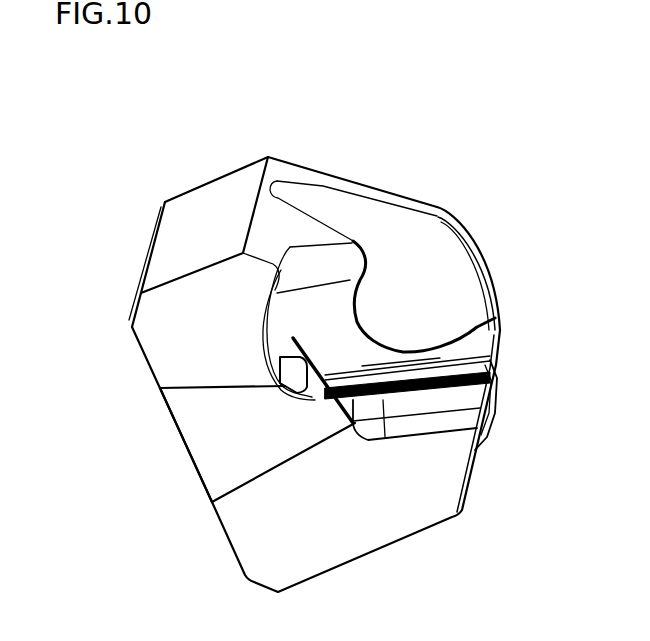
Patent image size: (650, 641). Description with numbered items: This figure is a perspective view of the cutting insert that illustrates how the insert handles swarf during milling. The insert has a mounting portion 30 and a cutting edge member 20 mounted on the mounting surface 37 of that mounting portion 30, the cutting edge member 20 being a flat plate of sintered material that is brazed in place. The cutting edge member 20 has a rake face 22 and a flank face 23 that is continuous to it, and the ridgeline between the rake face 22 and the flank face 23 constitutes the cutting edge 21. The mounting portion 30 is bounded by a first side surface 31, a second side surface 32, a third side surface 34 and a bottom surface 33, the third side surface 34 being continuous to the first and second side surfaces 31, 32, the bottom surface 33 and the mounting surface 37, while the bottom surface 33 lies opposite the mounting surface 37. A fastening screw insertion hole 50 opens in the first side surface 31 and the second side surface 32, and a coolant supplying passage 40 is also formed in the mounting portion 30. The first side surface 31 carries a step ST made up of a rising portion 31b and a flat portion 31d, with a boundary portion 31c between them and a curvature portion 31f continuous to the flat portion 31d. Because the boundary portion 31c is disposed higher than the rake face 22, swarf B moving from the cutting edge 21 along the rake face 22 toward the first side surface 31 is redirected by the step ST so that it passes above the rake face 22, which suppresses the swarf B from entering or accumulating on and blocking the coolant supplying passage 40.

The mounting portion 30 is at (457, 49).
The second side surface 32 is at (172, 428).
The third side surface 34 is at (230, 427).
The first side surface 31 is at (263, 81).
The mounting surface 37 is at (372, 438).
The bottom surface 33 is at (367, 553).
The step ST is at (210, 113).
The curvature portion 31f is at (345, 312).
The flat portion 31d is at (293, 337).
The boundary portion 31c is at (331, 400).
The rising portion 31b is at (333, 320).
The fastening screw insertion hole 50 is at (447, 265).
The rake face 22 is at (483, 383).
The cutting edge 21 is at (492, 387).
The flank face 23 is at (460, 407).
The cutting edge member 20 is at (553, 353).
The coolant supplying passage 40 is at (297, 397).
The swarf B is at (333, 320).